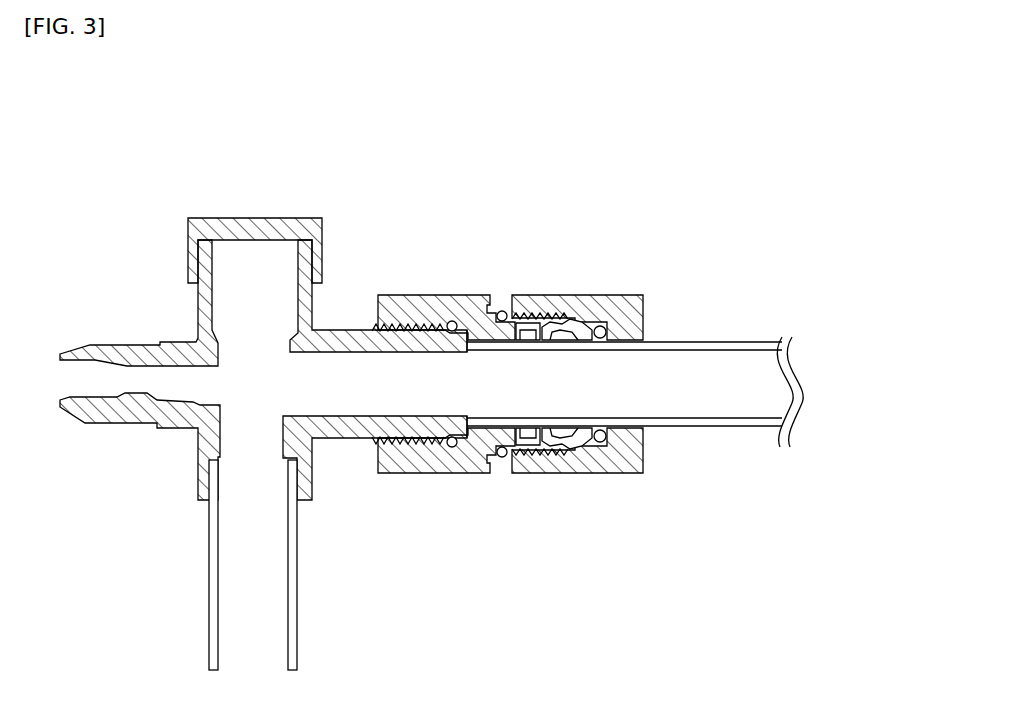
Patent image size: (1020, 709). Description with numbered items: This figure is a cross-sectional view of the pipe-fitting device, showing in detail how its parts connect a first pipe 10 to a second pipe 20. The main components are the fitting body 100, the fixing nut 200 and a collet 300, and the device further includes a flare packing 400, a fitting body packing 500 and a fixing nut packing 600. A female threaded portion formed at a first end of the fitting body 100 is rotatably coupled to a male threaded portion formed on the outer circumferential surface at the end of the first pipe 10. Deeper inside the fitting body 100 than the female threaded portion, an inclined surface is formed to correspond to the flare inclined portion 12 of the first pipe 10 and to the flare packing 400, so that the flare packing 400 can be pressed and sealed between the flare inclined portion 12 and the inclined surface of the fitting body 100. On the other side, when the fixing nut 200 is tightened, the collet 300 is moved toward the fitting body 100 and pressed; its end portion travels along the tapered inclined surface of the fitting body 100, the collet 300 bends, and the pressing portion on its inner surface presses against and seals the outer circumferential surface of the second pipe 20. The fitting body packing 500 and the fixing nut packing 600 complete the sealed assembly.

The first pipe 10 is at (338, 333).
The flare inclined portion 12 is at (467, 352).
The second pipe 20 is at (700, 343).
The fitting body 100 is at (412, 305).
The fixing nut 200 is at (612, 307).
The collet 300 is at (575, 340).
The flare packing 400 is at (456, 321).
The fitting body packing 500 is at (533, 318).
The fixing nut packing 600 is at (598, 340).